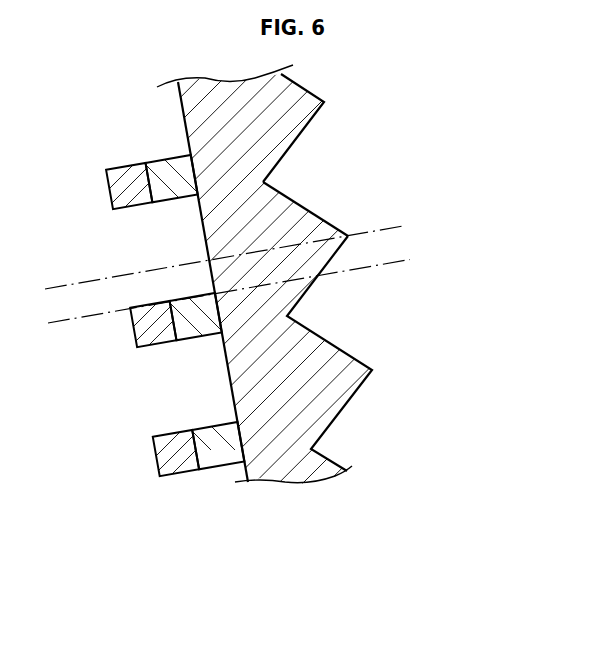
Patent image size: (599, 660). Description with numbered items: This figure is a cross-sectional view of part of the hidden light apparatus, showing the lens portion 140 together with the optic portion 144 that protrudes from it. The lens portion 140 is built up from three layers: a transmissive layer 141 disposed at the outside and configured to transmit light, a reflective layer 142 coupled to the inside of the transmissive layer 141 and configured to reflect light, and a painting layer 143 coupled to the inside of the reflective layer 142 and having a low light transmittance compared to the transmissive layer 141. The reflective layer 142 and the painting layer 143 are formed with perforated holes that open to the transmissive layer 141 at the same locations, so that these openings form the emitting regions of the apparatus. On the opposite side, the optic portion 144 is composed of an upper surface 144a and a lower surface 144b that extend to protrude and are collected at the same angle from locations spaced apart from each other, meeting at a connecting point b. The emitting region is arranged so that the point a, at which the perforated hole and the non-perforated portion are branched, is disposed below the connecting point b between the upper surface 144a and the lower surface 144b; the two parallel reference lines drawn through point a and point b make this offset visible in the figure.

The lens portion 140 is at (299, 341).
The transmissive layer 141 is at (283, 458).
The reflective layer 142 is at (220, 450).
The painting layer 143 is at (182, 347).
The optic portion 144 is at (415, 306).
The upper surface 144a is at (305, 207).
The lower surface 144b is at (399, 282).
The point at which the perforated hole and the non-perforated portion are branched a is at (216, 300).
The connecting point between the upper surface and the lower surface b is at (214, 266).